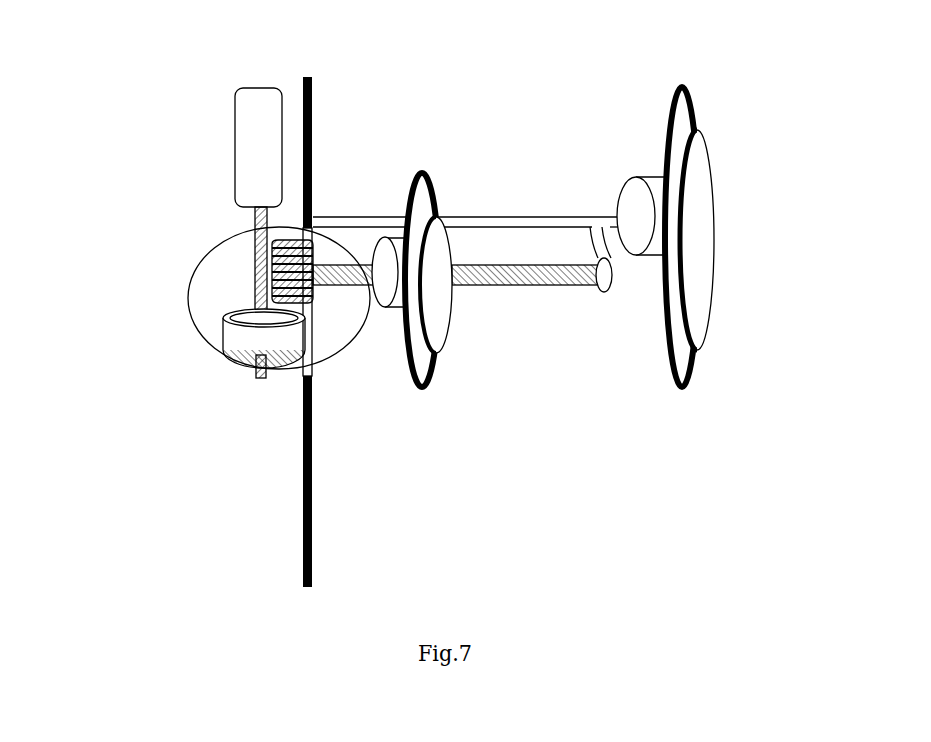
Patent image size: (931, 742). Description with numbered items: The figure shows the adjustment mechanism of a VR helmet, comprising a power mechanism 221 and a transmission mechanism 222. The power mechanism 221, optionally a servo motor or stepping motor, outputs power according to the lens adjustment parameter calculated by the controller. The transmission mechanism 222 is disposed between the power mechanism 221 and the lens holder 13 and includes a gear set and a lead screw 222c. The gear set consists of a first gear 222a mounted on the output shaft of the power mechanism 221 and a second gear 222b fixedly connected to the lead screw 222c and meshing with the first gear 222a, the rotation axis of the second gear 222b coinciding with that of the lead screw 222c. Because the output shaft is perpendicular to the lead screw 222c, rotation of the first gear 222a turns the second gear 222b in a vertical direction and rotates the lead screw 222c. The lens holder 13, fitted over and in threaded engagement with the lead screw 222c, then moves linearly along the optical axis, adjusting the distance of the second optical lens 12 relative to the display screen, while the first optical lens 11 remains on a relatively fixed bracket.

The first optical lens 11 is at (703, 315).
The second optical lens 12 is at (436, 310).
The lens holder 13 is at (398, 243).
The power mechanism 221 is at (248, 131).
The transmission mechanism 222 is at (336, 351).
The first gear 222a is at (238, 348).
The second gear 222b is at (280, 271).
The lead screw 222c is at (365, 267).